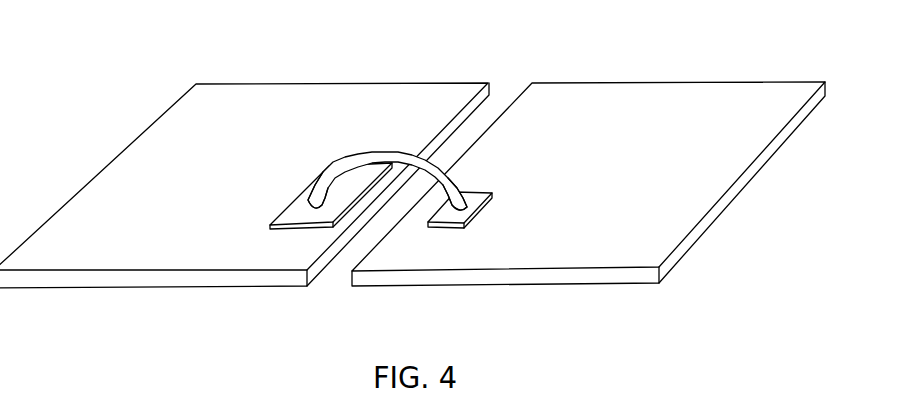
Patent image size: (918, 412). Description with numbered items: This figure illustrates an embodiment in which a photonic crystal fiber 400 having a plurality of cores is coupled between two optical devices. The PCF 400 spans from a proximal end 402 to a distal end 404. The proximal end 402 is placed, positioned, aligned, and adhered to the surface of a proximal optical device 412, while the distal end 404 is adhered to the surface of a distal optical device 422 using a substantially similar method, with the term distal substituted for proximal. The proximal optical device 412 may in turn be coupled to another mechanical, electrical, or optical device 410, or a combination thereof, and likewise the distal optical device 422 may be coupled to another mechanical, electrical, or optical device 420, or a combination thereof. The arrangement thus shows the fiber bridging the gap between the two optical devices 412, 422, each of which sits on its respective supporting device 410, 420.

The photonic crystal fiber 400 is at (381, 148).
The proximal end 402 is at (311, 203).
The distal end 404 is at (464, 204).
The mechanical, electrical, or optical device 410 is at (144, 151).
The proximal optical device 412 is at (283, 214).
The mechanical, electrical, or optical device 420 is at (749, 92).
The distal optical device 422 is at (482, 190).